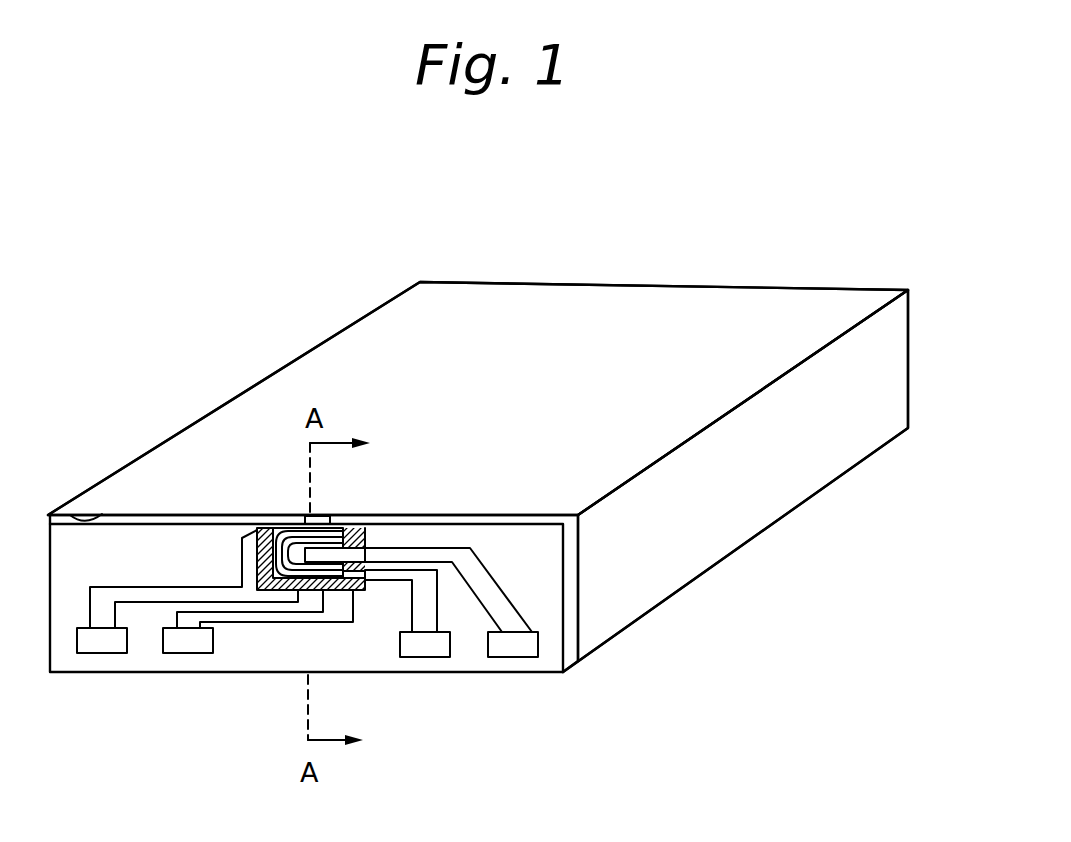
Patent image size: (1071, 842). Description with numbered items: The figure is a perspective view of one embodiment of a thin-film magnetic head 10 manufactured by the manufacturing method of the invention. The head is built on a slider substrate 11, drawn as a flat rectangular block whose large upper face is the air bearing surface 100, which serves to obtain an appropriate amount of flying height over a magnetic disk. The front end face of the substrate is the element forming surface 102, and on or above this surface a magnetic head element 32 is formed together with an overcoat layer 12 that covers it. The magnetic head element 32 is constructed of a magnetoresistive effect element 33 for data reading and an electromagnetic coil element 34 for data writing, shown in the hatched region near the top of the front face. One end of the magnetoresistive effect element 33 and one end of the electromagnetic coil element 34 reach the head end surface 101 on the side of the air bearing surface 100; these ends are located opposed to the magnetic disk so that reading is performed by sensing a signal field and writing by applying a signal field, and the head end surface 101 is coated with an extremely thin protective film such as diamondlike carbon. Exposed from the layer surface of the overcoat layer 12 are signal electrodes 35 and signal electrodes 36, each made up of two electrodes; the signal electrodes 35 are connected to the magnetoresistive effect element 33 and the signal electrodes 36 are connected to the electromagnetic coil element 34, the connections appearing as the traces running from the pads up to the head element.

The thin-film magnetic head 10 is at (575, 259).
The air bearing surface 100 is at (347, 357).
The head end surface 101 is at (203, 517).
The element forming surface 102 is at (76, 512).
The slider substrate 11 is at (735, 520).
The overcoat layer 12 is at (570, 630).
The magnetic head element 32 is at (485, 417).
The magnetoresistive effect element 33 is at (322, 516).
The electromagnetic coil element 34 is at (337, 527).
The signal electrodes 35 is at (192, 645).
The signal electrodes 36 is at (518, 647).